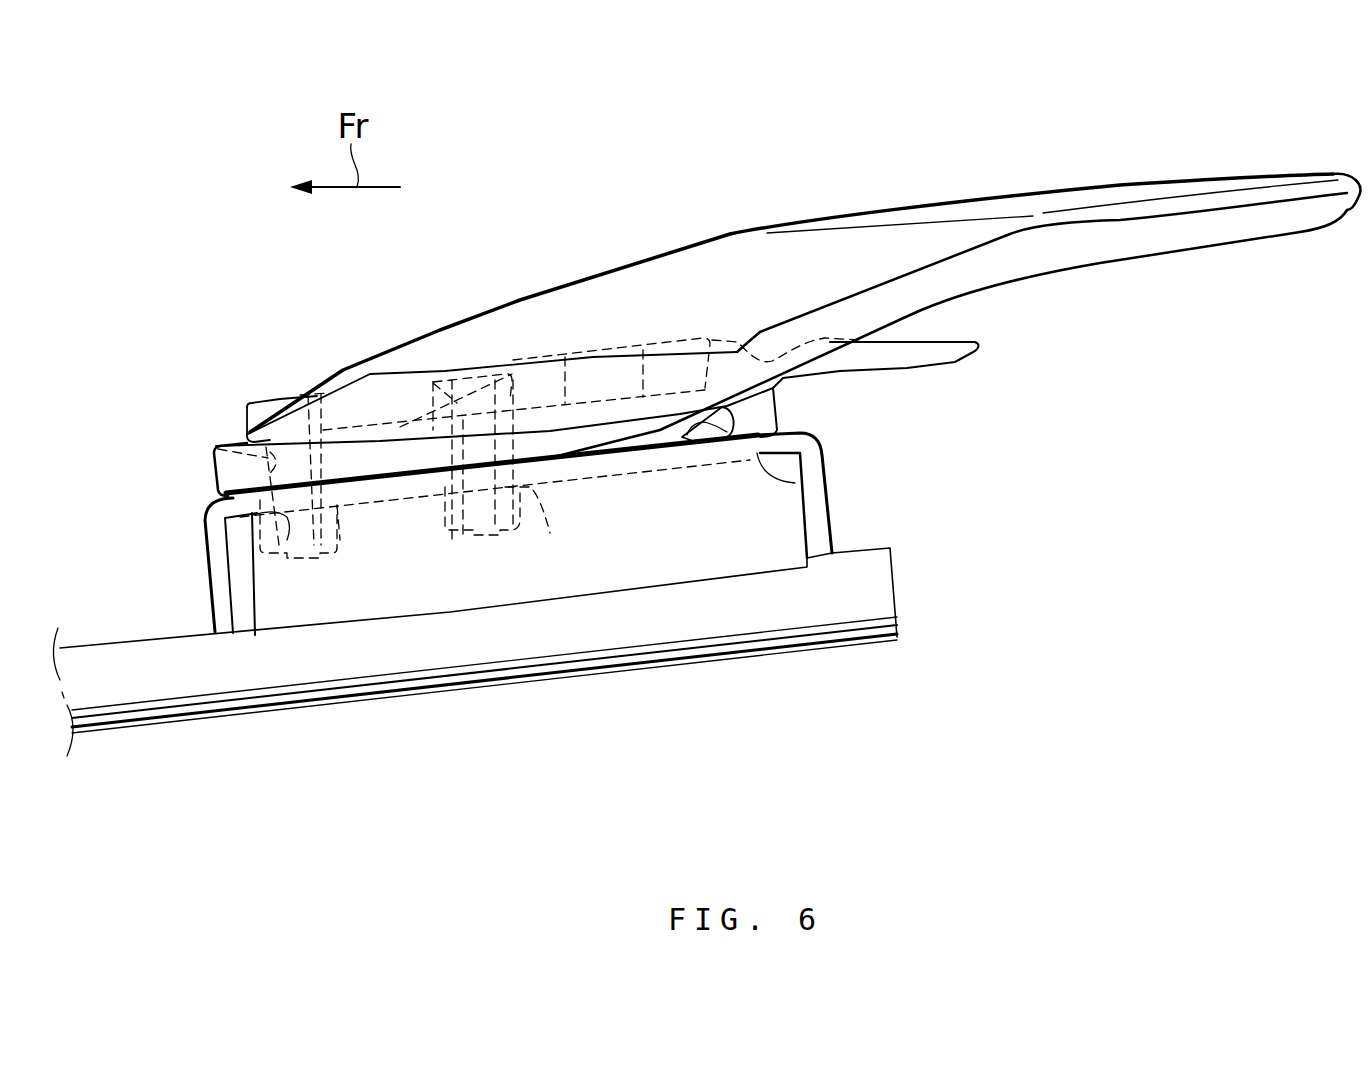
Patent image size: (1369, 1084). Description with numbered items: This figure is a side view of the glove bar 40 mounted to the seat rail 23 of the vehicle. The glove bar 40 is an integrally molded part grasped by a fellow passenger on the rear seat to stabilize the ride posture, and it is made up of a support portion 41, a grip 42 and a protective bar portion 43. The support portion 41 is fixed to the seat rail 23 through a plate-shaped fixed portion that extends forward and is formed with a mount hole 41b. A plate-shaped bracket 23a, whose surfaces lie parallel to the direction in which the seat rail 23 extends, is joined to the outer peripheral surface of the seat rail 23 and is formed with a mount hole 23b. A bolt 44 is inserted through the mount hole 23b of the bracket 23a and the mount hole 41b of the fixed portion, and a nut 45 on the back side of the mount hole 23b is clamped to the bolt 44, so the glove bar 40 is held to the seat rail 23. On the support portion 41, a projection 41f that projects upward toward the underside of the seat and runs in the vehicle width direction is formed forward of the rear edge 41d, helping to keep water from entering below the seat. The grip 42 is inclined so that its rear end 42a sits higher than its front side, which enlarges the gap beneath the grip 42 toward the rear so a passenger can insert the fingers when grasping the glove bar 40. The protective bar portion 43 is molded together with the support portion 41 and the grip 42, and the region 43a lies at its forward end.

The seat rail 23 is at (517, 684).
The bracket 23a is at (370, 498).
The mount hole 23b is at (270, 517).
The glove bar 40 is at (866, 190).
The support portion 41 is at (643, 350).
The mount hole 41b is at (433, 405).
The rear edge 41d is at (957, 352).
The projection 41f is at (726, 347).
The grip 42 is at (1082, 188).
The rear end 42a is at (1345, 174).
The protective bar portion 43 is at (538, 307).
The front end of cover 43a is at (247, 402).
The bolt 44 is at (452, 380).
The nut 45 is at (340, 530).